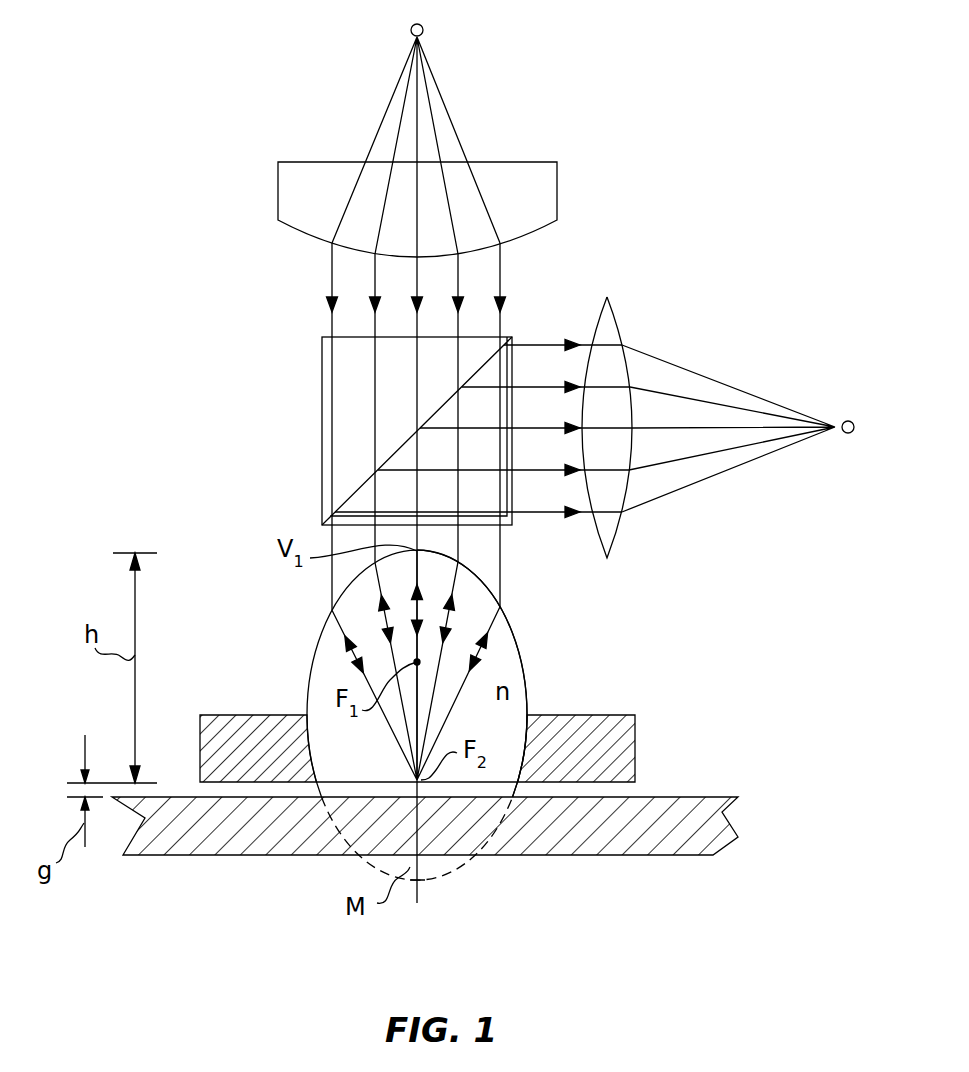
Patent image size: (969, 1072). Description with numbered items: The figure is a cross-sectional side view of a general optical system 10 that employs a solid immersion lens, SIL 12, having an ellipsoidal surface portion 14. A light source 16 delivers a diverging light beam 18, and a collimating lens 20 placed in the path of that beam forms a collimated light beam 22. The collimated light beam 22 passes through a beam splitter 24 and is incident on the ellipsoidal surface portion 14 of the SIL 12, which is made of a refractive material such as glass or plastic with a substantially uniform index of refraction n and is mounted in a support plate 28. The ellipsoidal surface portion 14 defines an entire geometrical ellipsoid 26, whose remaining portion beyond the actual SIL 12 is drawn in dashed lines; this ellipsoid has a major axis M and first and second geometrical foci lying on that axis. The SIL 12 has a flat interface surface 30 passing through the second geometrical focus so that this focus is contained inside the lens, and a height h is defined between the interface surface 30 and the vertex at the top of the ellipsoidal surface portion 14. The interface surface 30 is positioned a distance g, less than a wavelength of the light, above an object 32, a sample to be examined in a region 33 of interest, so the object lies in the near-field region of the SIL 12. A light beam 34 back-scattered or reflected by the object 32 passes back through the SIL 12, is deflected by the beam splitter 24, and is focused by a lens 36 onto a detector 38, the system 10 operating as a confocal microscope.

The optical system 10 is at (607, 110).
The SIL 12 is at (317, 668).
The ellipsoidal surface portion 14 is at (512, 623).
The light source 16 is at (424, 33).
The diverging light beam 18 is at (452, 113).
The collimating lens 20 is at (557, 198).
The collimated light beam 22 is at (332, 272).
The beam splitter 24 is at (321, 462).
The geometrical ellipsoid 26 is at (452, 872).
The support plate 28 is at (238, 713).
The flat interface surface 30 is at (354, 779).
The object 32 is at (617, 855).
The region of interest 33 is at (392, 788).
The back-scattered or reflected light beam 34 is at (532, 343).
The lens 36 is at (618, 322).
The detector 38 is at (848, 434).